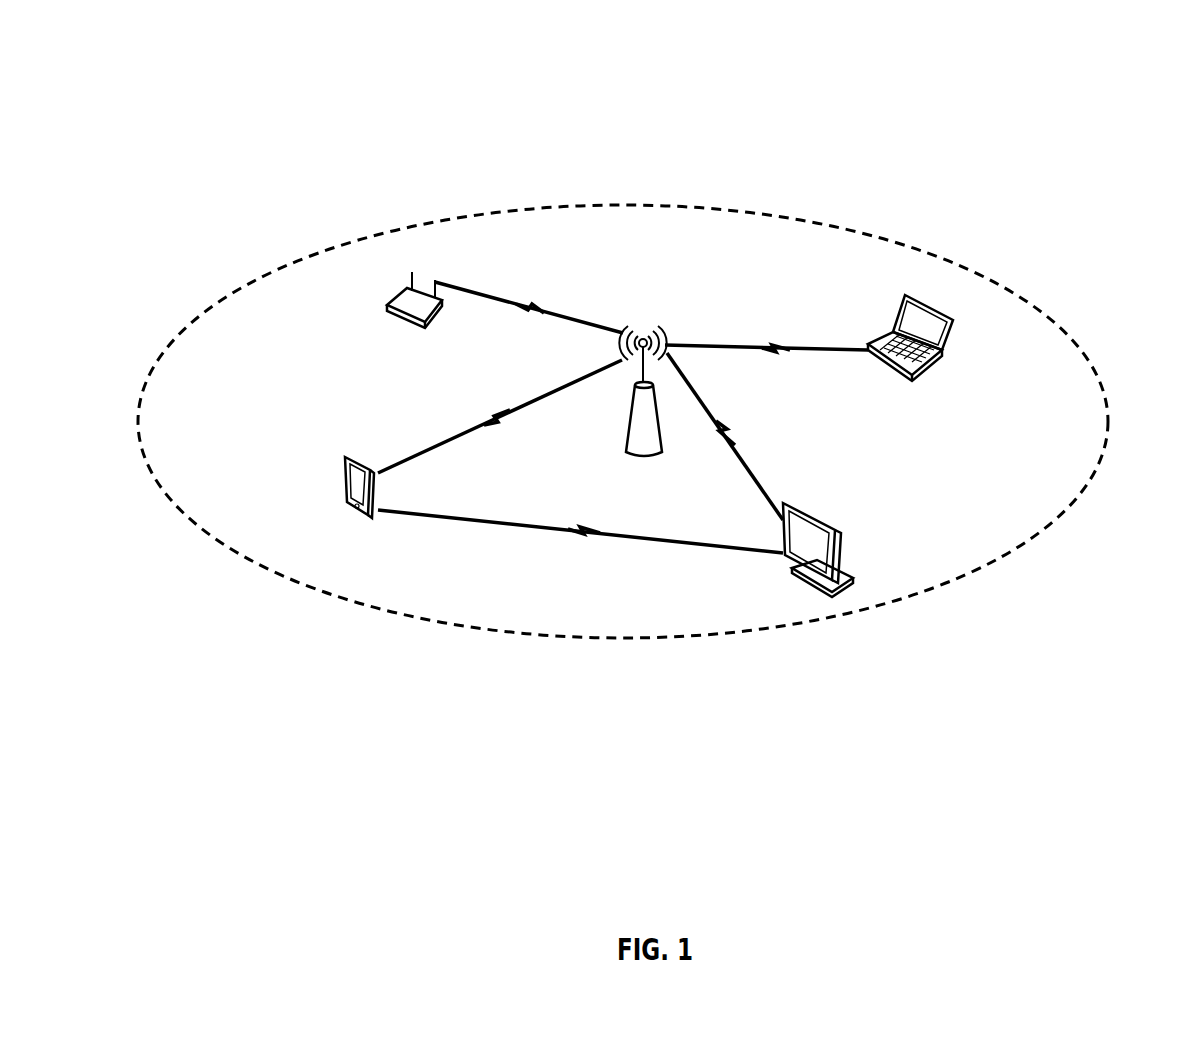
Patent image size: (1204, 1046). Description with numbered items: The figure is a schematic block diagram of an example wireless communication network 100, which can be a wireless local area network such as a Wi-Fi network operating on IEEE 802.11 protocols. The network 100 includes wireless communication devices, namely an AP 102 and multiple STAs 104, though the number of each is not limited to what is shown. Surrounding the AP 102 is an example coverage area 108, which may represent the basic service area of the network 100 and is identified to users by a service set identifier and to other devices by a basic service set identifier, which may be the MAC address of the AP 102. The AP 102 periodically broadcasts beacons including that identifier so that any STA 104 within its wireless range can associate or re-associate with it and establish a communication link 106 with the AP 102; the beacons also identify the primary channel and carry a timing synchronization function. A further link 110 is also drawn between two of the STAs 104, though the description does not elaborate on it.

The wireless communication network 100 is at (1113, 100).
The AP 102 is at (645, 457).
The STAs 104 is at (385, 305).
The communication link 106 is at (535, 305).
The coverage area 108 is at (215, 535).
The device-to-device link 110 is at (583, 532).